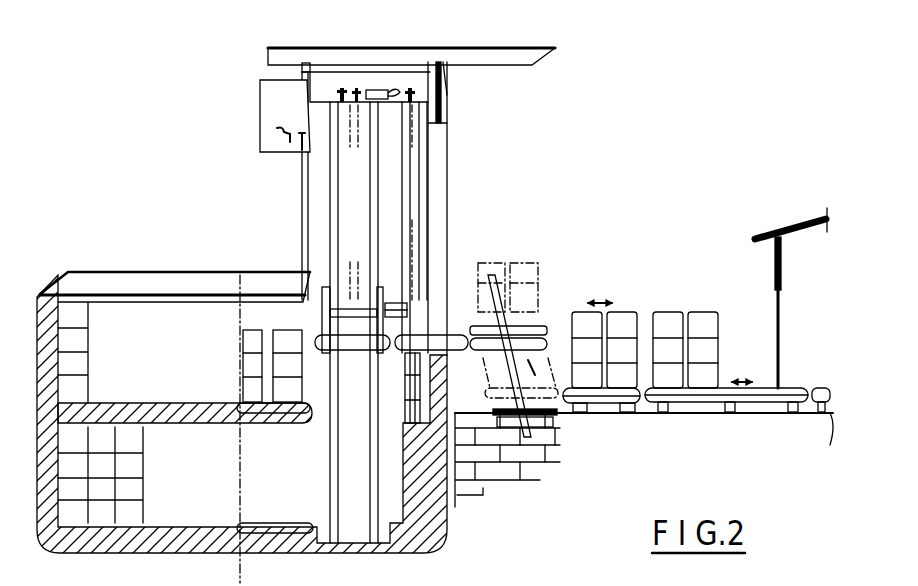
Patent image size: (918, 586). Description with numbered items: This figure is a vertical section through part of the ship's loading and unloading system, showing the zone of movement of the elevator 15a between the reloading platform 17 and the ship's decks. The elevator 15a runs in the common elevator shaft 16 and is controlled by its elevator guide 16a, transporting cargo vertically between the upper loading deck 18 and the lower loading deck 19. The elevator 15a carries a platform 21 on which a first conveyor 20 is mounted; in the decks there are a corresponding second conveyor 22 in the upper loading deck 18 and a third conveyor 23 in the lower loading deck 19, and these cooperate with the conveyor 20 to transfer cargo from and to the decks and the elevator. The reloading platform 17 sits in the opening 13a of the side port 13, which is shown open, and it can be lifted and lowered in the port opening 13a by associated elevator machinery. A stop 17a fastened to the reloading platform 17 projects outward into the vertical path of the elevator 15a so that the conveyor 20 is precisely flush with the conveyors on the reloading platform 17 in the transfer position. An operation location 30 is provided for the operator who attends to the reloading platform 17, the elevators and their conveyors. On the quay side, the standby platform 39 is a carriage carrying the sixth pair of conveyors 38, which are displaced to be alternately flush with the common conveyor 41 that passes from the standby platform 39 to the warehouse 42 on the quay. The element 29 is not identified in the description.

The side port 13 is at (512, 64).
The opening of the side port 13a is at (432, 220).
The elevator 15a is at (322, 338).
The elevator shaft 16 is at (392, 170).
The elevator guide 16a is at (372, 178).
The reloading platform 17 is at (418, 332).
The stop 17a is at (390, 305).
The upper loading deck 18 is at (148, 403).
The lower loading deck 19 is at (160, 522).
The first conveyor 20 is at (317, 337).
The platform of the elevator 21 is at (355, 353).
The second conveyor 22 is at (310, 410).
The third conveyor 23 is at (263, 527).
The mast rail 29 is at (448, 186).
The operation location 30 is at (260, 117).
The sixth pair of conveyors 38 is at (590, 387).
The standby platform 39 is at (620, 387).
The common conveyor 41 is at (710, 388).
The warehouse 42 is at (790, 325).